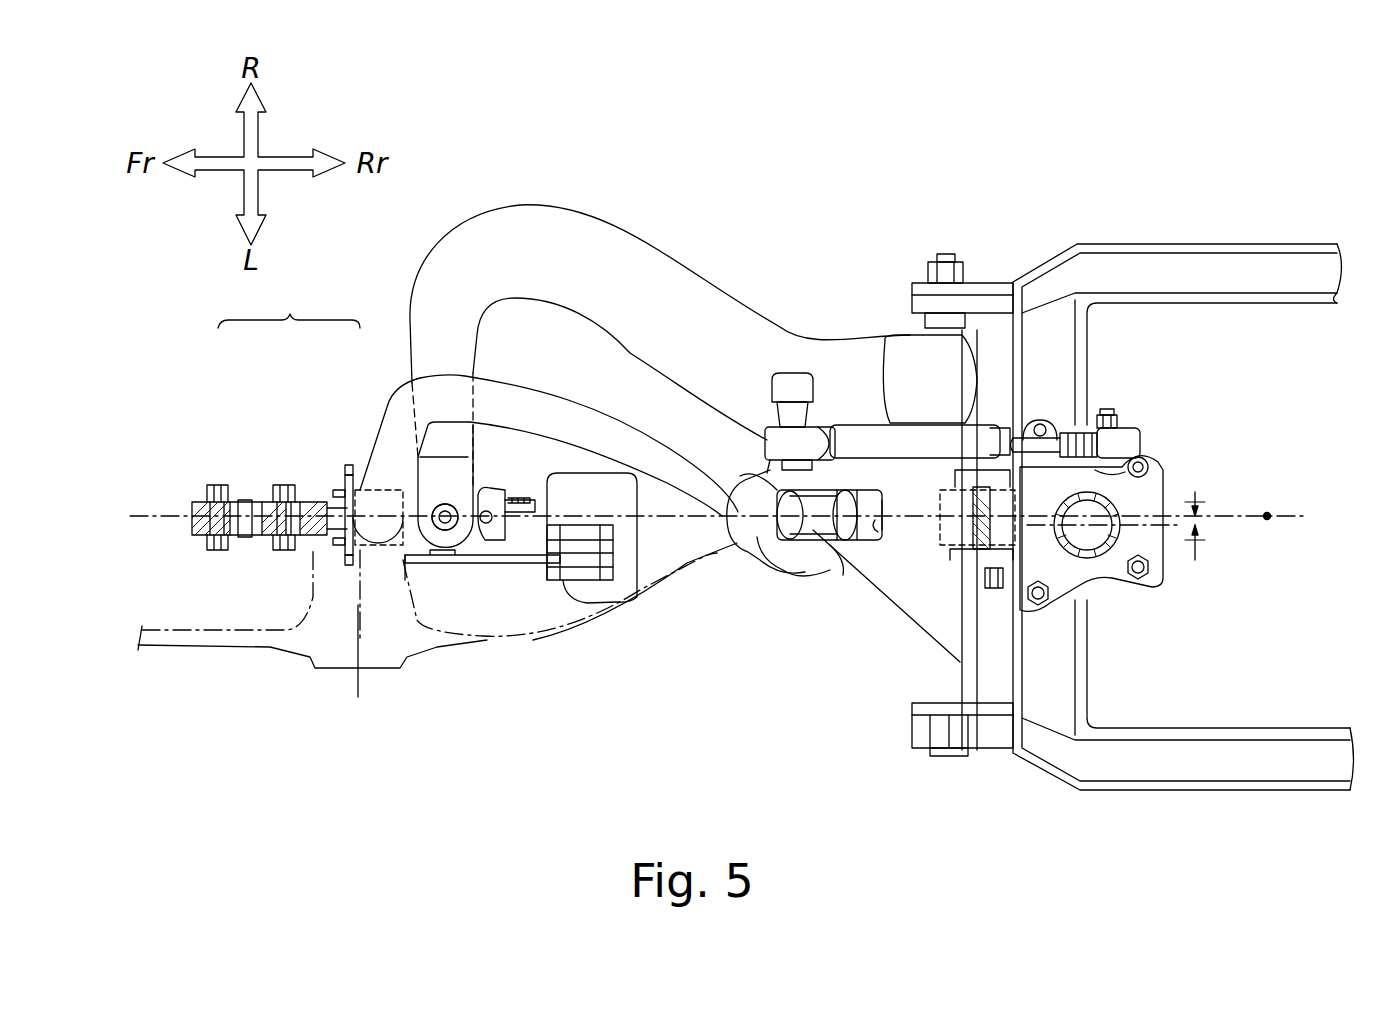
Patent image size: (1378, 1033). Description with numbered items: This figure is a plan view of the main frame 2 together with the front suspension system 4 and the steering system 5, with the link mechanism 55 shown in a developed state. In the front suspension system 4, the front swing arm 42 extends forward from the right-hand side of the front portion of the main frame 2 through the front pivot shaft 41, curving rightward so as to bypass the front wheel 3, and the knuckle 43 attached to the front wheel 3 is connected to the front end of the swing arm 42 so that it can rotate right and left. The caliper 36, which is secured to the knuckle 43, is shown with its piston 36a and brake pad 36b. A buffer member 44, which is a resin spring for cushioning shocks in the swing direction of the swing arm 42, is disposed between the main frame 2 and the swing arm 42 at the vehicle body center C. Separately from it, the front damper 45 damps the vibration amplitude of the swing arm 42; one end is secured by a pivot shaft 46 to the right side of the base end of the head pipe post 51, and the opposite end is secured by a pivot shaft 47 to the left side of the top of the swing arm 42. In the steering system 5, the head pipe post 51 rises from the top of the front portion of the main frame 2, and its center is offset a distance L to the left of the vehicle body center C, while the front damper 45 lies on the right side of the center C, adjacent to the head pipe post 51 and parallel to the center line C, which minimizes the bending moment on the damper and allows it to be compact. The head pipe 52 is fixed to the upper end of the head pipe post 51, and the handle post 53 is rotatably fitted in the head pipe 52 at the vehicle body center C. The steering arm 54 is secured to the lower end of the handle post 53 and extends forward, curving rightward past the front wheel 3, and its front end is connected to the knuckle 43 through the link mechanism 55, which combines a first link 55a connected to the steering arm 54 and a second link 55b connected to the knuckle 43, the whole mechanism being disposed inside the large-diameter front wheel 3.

The main frame 2 is at (1217, 244).
The front wheel 3 is at (207, 647).
The front suspension system 4 is at (992, 605).
The steering system 5 is at (737, 567).
The caliper 36 is at (603, 600).
The piston 36a is at (560, 520).
The brake pad 36b is at (560, 572).
The front pivot shaft 41 is at (953, 303).
The front swing arm 42 is at (625, 238).
The knuckle 43 is at (190, 510).
The buffer member 44 is at (973, 560).
The front damper 45 is at (880, 423).
The pivot shaft 46 is at (1108, 408).
The pivot shaft 47 is at (847, 437).
The head pipe post 51 is at (1100, 555).
The head pipe 52 is at (820, 532).
The handle post 53 is at (863, 540).
The steering arm 54 is at (530, 395).
The link mechanism 55 is at (289, 306).
The first link 55a is at (313, 502).
The second link 55b is at (254, 502).
The vehicle body center C is at (1267, 515).
The offset distance L is at (1116, 548).